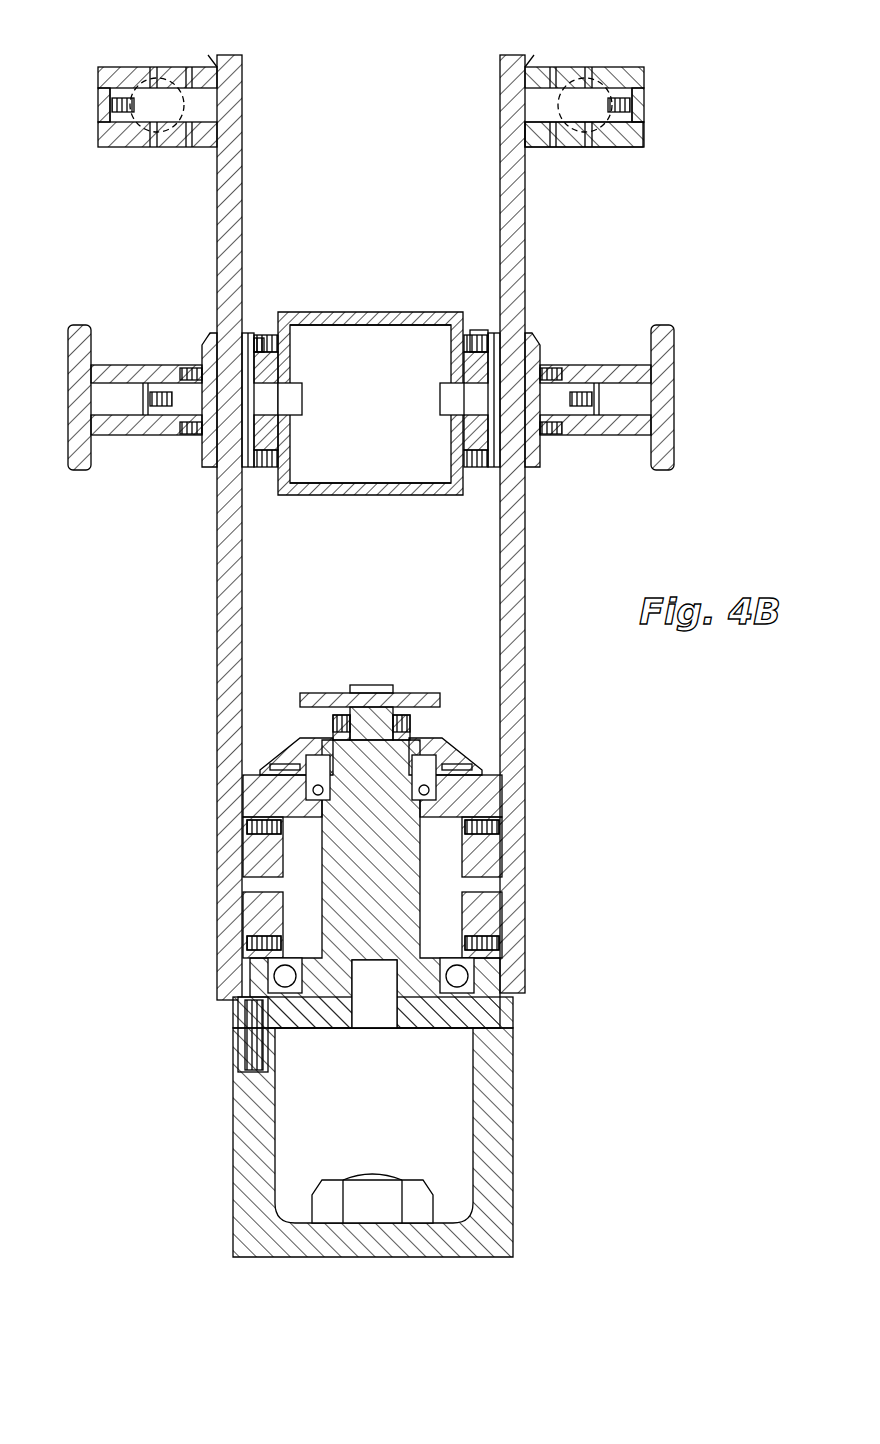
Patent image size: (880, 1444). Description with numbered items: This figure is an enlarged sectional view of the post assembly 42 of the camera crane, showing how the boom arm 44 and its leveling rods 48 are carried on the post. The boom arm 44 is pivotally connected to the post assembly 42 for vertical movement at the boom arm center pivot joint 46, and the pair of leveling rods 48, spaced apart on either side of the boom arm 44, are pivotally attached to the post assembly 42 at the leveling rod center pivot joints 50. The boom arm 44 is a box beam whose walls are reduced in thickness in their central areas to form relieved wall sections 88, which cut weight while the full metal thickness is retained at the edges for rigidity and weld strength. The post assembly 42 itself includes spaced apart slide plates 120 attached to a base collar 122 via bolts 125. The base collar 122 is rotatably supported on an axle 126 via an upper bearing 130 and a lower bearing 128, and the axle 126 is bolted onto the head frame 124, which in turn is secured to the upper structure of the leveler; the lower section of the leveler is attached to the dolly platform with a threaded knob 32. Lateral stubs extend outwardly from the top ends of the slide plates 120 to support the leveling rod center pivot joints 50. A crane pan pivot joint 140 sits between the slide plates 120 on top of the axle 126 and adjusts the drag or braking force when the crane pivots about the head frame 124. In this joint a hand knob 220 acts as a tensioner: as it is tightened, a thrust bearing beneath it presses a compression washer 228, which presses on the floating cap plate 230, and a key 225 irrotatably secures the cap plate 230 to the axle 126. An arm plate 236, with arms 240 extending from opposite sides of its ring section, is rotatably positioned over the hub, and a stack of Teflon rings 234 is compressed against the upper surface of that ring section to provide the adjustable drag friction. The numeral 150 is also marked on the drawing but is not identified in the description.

The post assembly 42 is at (532, 616).
The boom arm 44 is at (415, 312).
The boom arm center pivot joint 46 is at (176, 335).
The leveling rods 48 is at (165, 72).
The leveling rod center pivot joints 50 is at (182, 60).
The hub lower wall 150 is at (598, 150).
The relieved wall sections 88 is at (326, 312).
The hand knob 220 is at (82, 472).
The key 225 is at (347, 700).
The compression washer 228 is at (556, 365).
The cap plate 230 is at (202, 462).
The Teflon rings 234 is at (255, 470).
The arm plate 236 is at (480, 472).
The arms 240 is at (482, 336).
The crane pan pivot joint 140 is at (460, 732).
The slide plates 120 is at (238, 782).
The base collar 122 is at (485, 915).
The head frame 124 is at (502, 1100).
The bolts 125 is at (527, 830).
The axle 126 is at (503, 1010).
The lower bearing 128 is at (475, 978).
The upper bearing 130 is at (300, 785).
The threaded knob 32 is at (380, 1180).